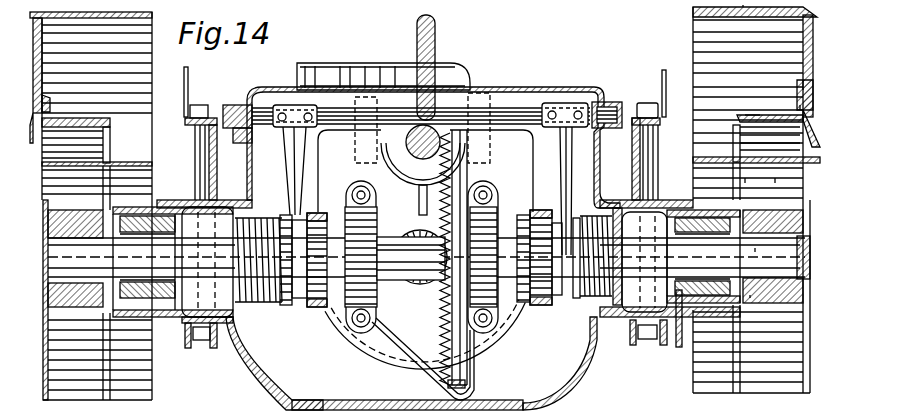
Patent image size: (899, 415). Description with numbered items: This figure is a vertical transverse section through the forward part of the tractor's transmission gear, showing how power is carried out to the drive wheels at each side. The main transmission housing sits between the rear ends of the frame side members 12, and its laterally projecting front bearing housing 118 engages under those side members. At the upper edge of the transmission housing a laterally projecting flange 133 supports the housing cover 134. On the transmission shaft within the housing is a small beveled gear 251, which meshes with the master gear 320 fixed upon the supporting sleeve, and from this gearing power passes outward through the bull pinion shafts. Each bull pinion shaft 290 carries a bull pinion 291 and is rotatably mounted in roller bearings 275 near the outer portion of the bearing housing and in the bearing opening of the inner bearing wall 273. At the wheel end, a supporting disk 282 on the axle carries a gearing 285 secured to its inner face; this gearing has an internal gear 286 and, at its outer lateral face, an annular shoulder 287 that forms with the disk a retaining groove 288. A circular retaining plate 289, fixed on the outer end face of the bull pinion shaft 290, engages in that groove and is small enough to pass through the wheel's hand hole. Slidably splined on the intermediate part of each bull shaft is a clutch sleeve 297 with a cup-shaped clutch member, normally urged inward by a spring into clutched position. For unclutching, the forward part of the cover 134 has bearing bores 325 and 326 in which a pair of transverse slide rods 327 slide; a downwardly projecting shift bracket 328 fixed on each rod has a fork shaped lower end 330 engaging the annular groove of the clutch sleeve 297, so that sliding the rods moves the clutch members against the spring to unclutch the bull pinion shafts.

The side members 12 is at (218, 148).
The front bearing housing 118 is at (690, 190).
The laterally projecting flange 133 is at (603, 138).
The housing cover 134 is at (565, 90).
The small beveled gear 251 is at (418, 292).
The inner bearing wall 273 is at (630, 283).
The roller bearings 275 is at (683, 297).
The supporting disk 282 is at (802, 88).
The gearing 285 is at (747, 117).
The internal gear 286 is at (778, 180).
The annular shoulder 287 is at (788, 95).
The retaining groove 288 is at (800, 107).
The circular retaining plate 289 is at (747, 180).
The bull pinion shaft 290 is at (757, 250).
The bull pinion 291 is at (752, 297).
The clutch sleeve 297 is at (543, 300).
The master gear 320 is at (475, 375).
The bearing bore 325 is at (480, 110).
The bearing bore 326 is at (612, 93).
The transverse slide rods 327 is at (517, 113).
The shift bracket 328 is at (560, 170).
The fork shaped lower end 330 is at (567, 292).